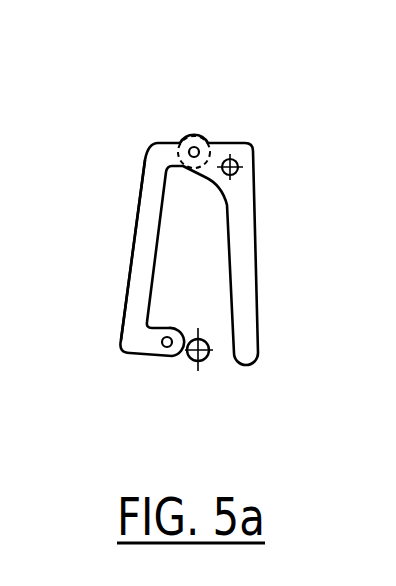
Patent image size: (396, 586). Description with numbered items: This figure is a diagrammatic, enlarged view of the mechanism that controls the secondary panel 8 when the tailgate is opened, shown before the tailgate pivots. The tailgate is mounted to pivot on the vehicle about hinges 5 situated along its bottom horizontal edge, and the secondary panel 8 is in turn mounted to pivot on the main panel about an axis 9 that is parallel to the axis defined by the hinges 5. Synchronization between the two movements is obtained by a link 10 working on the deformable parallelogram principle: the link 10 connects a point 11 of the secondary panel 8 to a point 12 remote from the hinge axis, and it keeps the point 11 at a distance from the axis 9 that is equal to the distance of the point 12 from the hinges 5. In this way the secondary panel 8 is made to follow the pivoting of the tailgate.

The hinges 5 is at (216, 368).
The secondary panel 8 is at (240, 255).
The axis 9 is at (240, 165).
The link 10 is at (138, 252).
The point of the secondary panel 11 is at (192, 140).
The point 12 is at (161, 355).